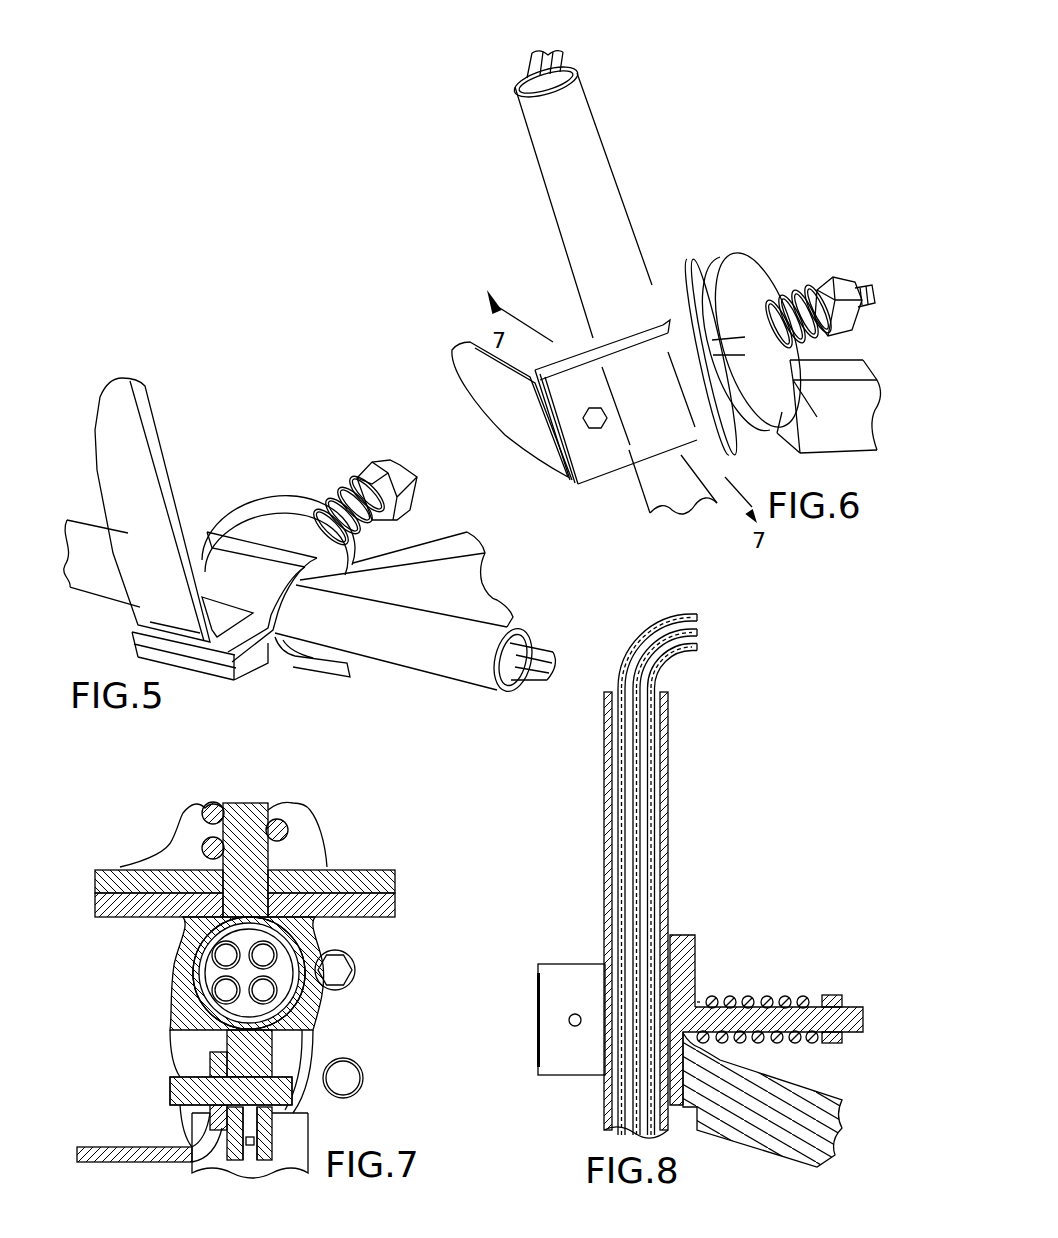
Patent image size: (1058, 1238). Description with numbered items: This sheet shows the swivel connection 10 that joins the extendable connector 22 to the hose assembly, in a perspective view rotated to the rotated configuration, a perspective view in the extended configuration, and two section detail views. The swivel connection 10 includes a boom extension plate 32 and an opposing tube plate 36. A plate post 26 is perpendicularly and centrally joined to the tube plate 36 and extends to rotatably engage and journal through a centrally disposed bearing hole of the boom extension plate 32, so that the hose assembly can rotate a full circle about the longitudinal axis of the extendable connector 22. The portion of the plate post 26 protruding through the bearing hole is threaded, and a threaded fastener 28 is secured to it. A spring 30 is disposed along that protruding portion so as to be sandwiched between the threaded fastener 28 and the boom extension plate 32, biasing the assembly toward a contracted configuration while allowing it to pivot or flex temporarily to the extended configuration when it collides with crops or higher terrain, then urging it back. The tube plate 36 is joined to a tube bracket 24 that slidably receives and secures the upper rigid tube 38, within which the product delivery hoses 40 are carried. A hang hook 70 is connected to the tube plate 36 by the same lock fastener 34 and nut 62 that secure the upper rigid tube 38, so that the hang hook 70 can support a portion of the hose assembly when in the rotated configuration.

In FIG. 5, the swivel connection 10 is at (158, 380).
In FIG. 6, the swivel connection 10 is at (512, 158).
In FIG. 8, the swivel connection 10 is at (581, 916).
In FIG. 5, the extendable connector 22 is at (482, 583).
In FIG. 6, the extendable connector 22 is at (845, 440).
In FIG. 7, the extendable connector 22 is at (297, 813).
In FIG. 8, the extendable connector 22 is at (803, 1087).
In FIG. 5, the tube bracket 24 is at (247, 670).
In FIG. 6, the tube bracket 24 is at (603, 465).
In FIG. 7, the tube bracket 24 is at (177, 978).
In FIG. 8, the tube bracket 24 is at (578, 1075).
In FIG. 5, the plate post 26 is at (393, 460).
In FIG. 6, the plate post 26 is at (860, 287).
In FIG. 7, the plate post 26 is at (277, 853).
In FIG. 8, the plate post 26 is at (737, 1003).
In FIG. 5, the threaded fastener 28 is at (380, 462).
In FIG. 6, the threaded fastener 28 is at (830, 280).
In FIG. 7, the threaded fastener 28 is at (339, 1024).
In FIG. 8, the threaded fastener 28 is at (832, 995).
In FIG. 5, the spring 30 is at (353, 507).
In FIG. 6, the spring 30 is at (813, 337).
In FIG. 7, the spring 30 is at (210, 810).
In FIG. 8, the spring 30 is at (803, 1000).
In FIG. 5, the boom extension plate 32 is at (350, 567).
In FIG. 6, the boom extension plate 32 is at (720, 267).
In FIG. 7, the boom extension plate 32 is at (385, 867).
In FIG. 8, the boom extension plate 32 is at (695, 957).
In FIG. 6, the lock fastener 34 is at (590, 410).
In FIG. 7, the lock fastener 34 is at (293, 1147).
In FIG. 8, the lock fastener 34 is at (570, 1027).
In FIG. 5, the tube plate 36 is at (233, 520).
In FIG. 6, the tube plate 36 is at (657, 287).
In FIG. 7, the tube plate 36 is at (360, 917).
In FIG. 8, the tube plate 36 is at (675, 935).
In FIG. 5, the upper rigid tube 38 is at (395, 662).
In FIG. 6, the upper rigid tube 38 is at (563, 210).
In FIG. 7, the upper rigid tube 38 is at (193, 997).
In FIG. 8, the upper rigid tube 38 is at (668, 833).
In FIG. 5, the product delivery hoses 40 is at (538, 645).
In FIG. 6, the product delivery hoses 40 is at (520, 66).
In FIG. 7, the product delivery hoses 40 is at (267, 993).
In FIG. 8, the product delivery hoses 40 is at (650, 625).
In FIG. 7, the nut 62 is at (195, 1057).
In FIG. 5, the hang hook 70 is at (157, 428).
In FIG. 6, the hang hook 70 is at (457, 352).
In FIG. 7, the hang hook 70 is at (150, 1147).